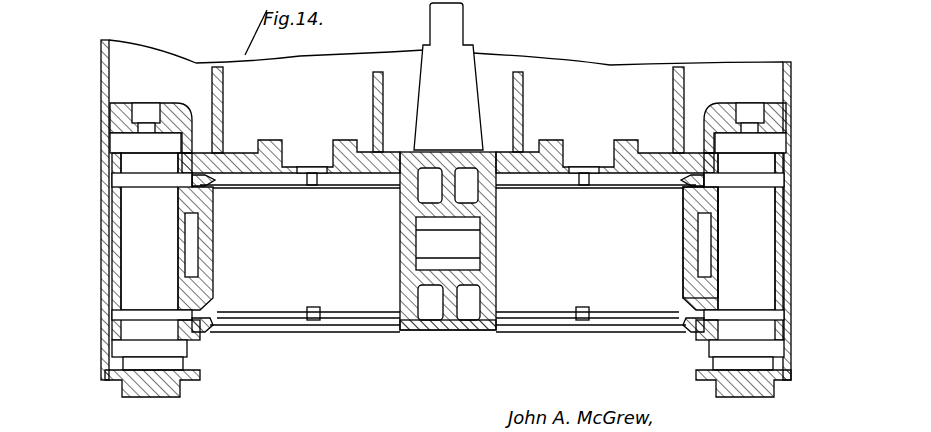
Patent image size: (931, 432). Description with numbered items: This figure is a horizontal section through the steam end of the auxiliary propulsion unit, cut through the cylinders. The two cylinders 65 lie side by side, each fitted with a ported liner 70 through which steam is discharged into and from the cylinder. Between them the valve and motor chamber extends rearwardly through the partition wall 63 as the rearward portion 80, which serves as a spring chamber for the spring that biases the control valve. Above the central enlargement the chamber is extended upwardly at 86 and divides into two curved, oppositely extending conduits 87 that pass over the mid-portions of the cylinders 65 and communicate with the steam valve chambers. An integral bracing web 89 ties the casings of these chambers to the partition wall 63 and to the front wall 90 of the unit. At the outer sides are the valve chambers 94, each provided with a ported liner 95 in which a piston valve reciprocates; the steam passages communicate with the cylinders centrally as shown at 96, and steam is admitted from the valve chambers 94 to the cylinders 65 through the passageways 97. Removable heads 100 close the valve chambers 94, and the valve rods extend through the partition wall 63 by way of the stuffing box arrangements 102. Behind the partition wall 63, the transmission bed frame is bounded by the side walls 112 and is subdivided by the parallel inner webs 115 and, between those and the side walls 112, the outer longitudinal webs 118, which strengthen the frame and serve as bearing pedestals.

The side walls 112 is at (109, 52).
The stuffing box arrangements 102 is at (156, 110).
The outer longitudinal webs 118 is at (229, 84).
The inner webs 115 is at (373, 80).
The rearward portion of the chamber 80 is at (462, 57).
The partition wall 63 is at (395, 155).
The liners 70 is at (400, 243).
The bracing web 89 is at (453, 190).
The upward extension of the central enlargement 86 is at (470, 243).
The cylinders 65 is at (683, 263).
The front wall 90 is at (470, 333).
The passageways 97 is at (199, 186).
The ported liners 95 is at (110, 211).
The valve chambers 94 is at (133, 233).
The steam passage communication 96 is at (181, 243).
The curved conduits 87 is at (194, 263).
The removable heads 100 is at (139, 393).